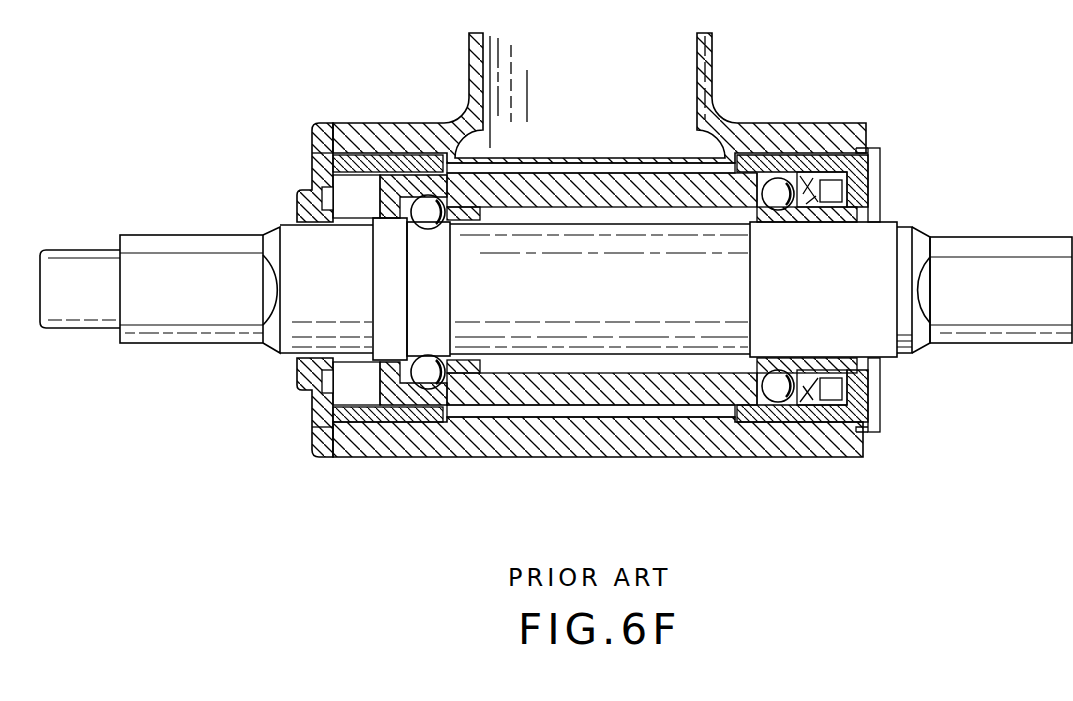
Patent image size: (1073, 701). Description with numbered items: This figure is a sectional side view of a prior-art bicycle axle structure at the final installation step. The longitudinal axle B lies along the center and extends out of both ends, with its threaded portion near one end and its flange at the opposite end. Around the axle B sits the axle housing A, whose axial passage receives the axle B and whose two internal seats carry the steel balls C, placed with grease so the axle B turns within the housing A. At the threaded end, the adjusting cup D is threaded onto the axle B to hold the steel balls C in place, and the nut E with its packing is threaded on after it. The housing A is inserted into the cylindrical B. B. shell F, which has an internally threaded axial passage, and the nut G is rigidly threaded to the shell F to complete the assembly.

The axle housing A is at (600, 275).
The axle B is at (512, 334).
The steel balls C is at (428, 207).
The adjusting cup D is at (813, 222).
The nut E is at (869, 184).
The B. B. shell F is at (720, 128).
The nut G is at (328, 124).